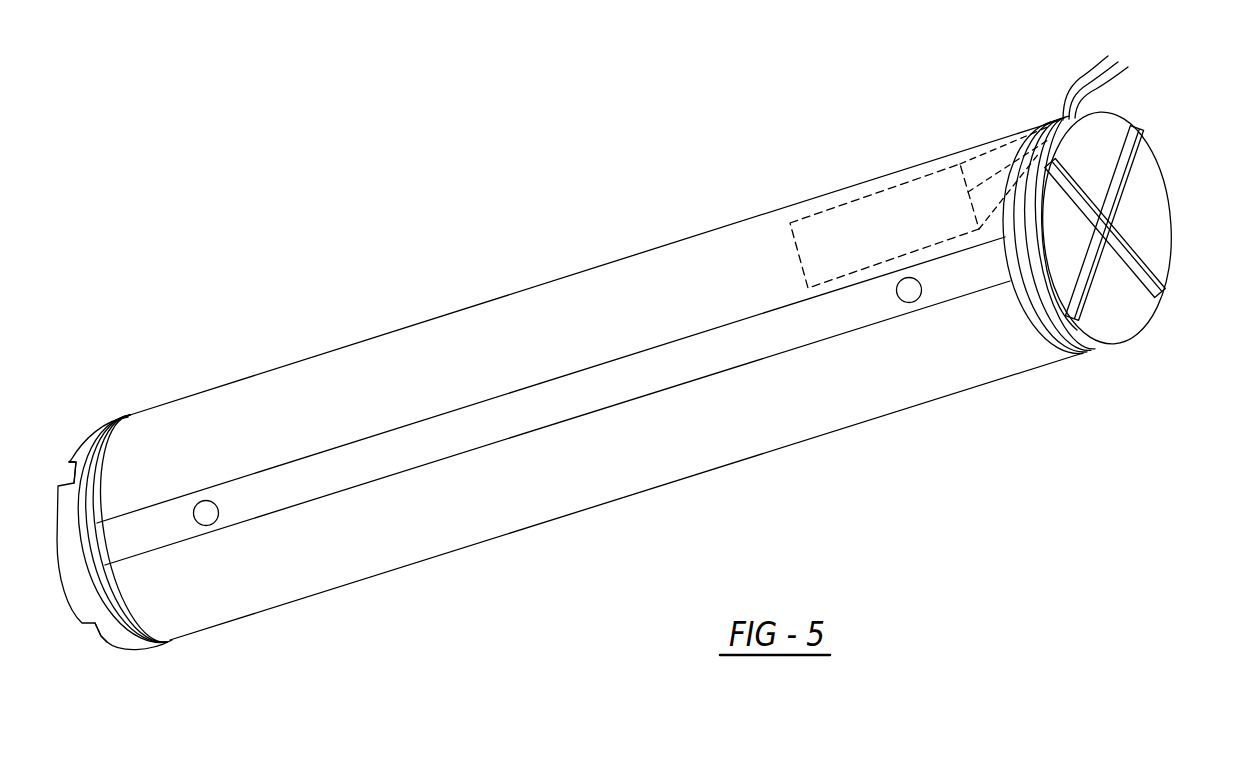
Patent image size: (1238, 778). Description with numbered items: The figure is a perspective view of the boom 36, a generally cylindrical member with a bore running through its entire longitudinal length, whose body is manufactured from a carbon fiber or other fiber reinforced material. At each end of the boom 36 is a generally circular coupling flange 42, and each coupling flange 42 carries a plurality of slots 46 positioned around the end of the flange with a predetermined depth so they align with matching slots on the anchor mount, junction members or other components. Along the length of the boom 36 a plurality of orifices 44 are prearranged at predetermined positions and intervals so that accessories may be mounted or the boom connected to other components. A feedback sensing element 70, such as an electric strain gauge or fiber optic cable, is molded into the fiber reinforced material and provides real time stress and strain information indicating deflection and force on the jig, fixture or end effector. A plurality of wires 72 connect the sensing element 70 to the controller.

The boom 36 is at (496, 172).
The coupling flange 42 is at (128, 650).
The orifices 44 is at (207, 516).
The slots 46 is at (68, 470).
The feedback sensing element 70 is at (873, 211).
The wires 72 is at (1073, 67).